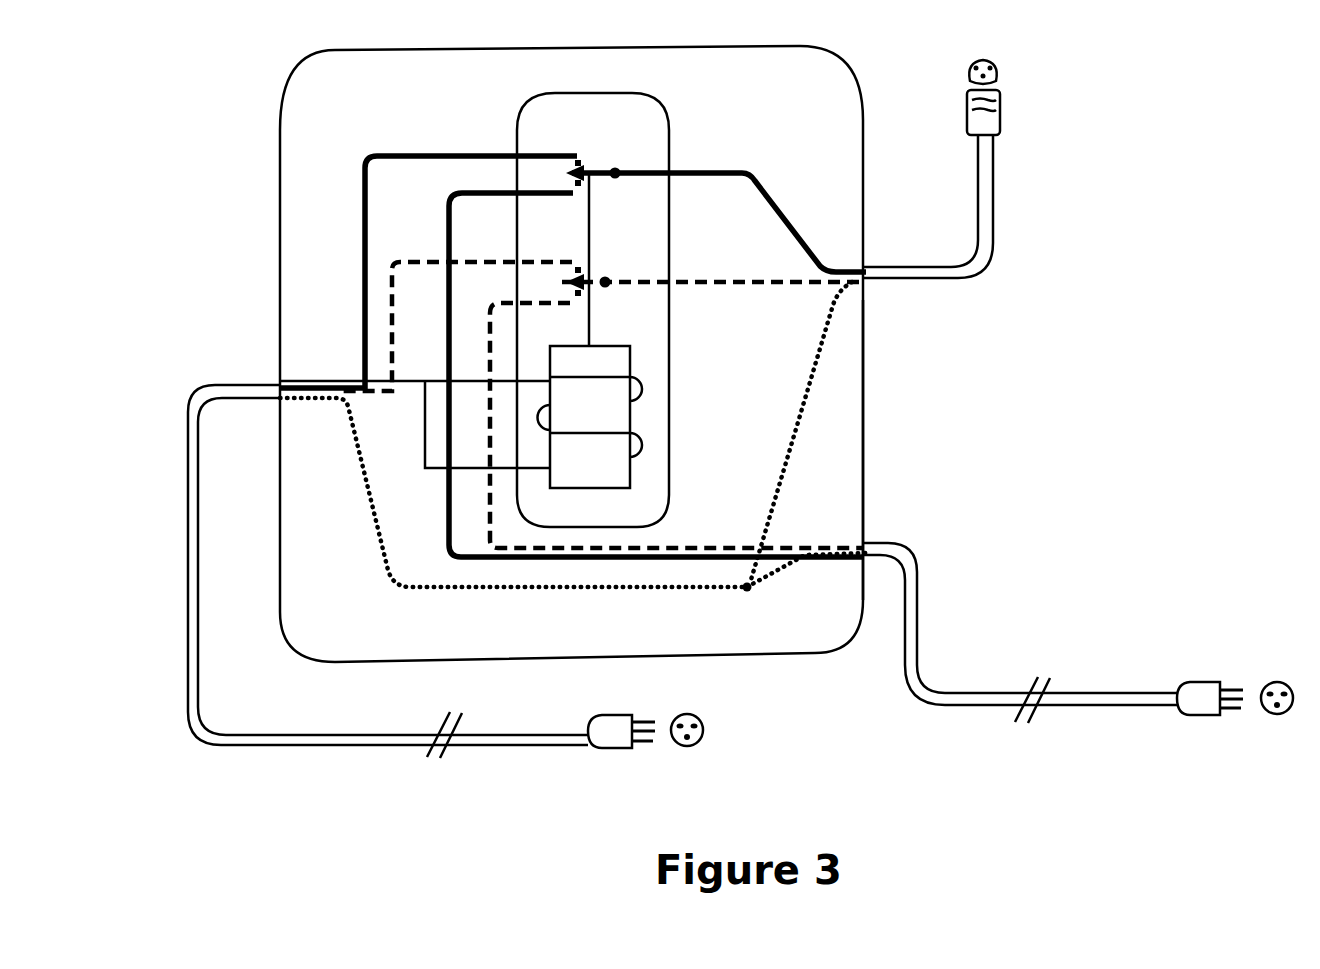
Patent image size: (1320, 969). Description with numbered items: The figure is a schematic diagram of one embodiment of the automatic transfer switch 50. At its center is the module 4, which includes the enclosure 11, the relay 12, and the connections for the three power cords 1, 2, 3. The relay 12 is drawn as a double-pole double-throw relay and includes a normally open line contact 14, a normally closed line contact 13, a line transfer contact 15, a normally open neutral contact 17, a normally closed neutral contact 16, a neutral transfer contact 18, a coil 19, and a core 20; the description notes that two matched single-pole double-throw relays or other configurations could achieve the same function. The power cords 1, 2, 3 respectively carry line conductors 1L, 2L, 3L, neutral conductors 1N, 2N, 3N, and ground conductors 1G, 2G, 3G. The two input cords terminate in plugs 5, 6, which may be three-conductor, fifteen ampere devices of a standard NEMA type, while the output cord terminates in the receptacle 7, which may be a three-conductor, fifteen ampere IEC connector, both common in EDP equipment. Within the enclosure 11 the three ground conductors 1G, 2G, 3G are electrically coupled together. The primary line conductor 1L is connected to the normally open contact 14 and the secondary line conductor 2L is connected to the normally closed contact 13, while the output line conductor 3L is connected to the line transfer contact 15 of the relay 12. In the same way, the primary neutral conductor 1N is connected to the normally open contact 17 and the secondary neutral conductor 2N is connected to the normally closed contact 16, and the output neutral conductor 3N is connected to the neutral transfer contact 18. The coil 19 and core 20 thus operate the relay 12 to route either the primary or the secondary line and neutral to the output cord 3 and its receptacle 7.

The power cord 1 is at (265, 742).
The power cord 2 is at (1072, 704).
The power cord 3 is at (927, 275).
The module 4 is at (262, 197).
The plug 5 is at (610, 730).
The plug 6 is at (1200, 700).
The receptacle 7 is at (988, 118).
The enclosure 11 is at (869, 405).
The relay 12 is at (640, 114).
The normally closed line contact 13 is at (572, 197).
The normally open line contact 14 is at (578, 150).
The line transfer contact 15 is at (590, 168).
The normally closed neutral contact 16 is at (572, 304).
The normally open neutral contact 17 is at (570, 260).
The neutral transfer contact 18 is at (598, 278).
The coil 19 is at (640, 367).
The core 20 is at (600, 417).
The automatic transfer switch 50 is at (1068, 426).
The primary line conductor 1L is at (480, 152).
The secondary line conductor 2L is at (457, 228).
The output line conductor 3L is at (748, 173).
The primary neutral conductor 1N is at (397, 273).
The secondary neutral conductor 2N is at (660, 546).
The output neutral conductor 3N is at (680, 280).
The ground conductor 1G is at (372, 500).
The ground conductor 2G is at (767, 580).
The ground conductor 3G is at (800, 400).